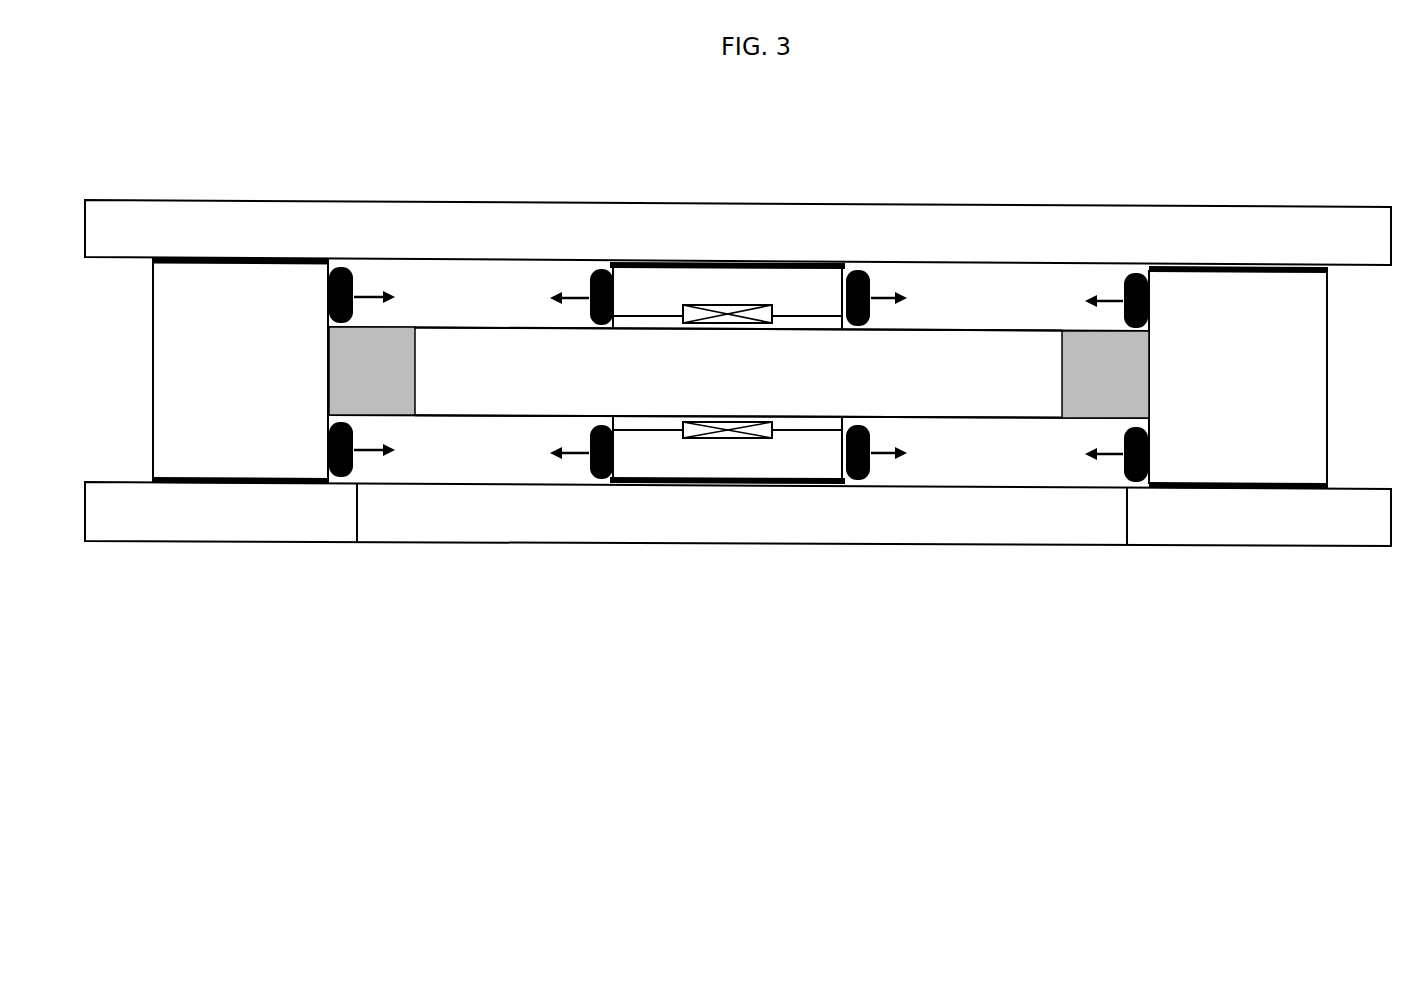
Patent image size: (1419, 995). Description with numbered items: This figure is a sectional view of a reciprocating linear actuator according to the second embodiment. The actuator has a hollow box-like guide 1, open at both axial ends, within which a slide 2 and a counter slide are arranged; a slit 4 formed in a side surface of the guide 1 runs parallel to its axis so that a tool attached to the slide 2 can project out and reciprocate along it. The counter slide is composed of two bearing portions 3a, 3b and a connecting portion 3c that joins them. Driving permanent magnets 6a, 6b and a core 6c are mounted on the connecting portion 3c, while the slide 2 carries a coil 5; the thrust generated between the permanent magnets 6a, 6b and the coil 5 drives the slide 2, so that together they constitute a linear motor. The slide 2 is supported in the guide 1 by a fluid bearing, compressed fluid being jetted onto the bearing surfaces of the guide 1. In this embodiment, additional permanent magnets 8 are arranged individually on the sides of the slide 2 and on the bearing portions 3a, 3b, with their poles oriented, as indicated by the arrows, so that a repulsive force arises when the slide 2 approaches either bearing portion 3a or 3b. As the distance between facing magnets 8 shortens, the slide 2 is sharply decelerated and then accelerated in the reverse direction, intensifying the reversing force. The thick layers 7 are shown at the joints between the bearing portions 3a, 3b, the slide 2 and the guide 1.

The guide 1 is at (917, 206).
The slide 2 is at (652, 460).
The bearing portion 3a is at (202, 297).
The bearing portion 3b is at (1270, 300).
The connecting portion 3c is at (465, 363).
The slit 4 is at (962, 520).
The coil 5 is at (735, 300).
The permanent magnet 6a is at (395, 388).
The permanent magnet 6b is at (1082, 390).
The core 6c is at (492, 400).
The bonding layer 7 is at (272, 483).
The permanent magnet 8 is at (355, 277).